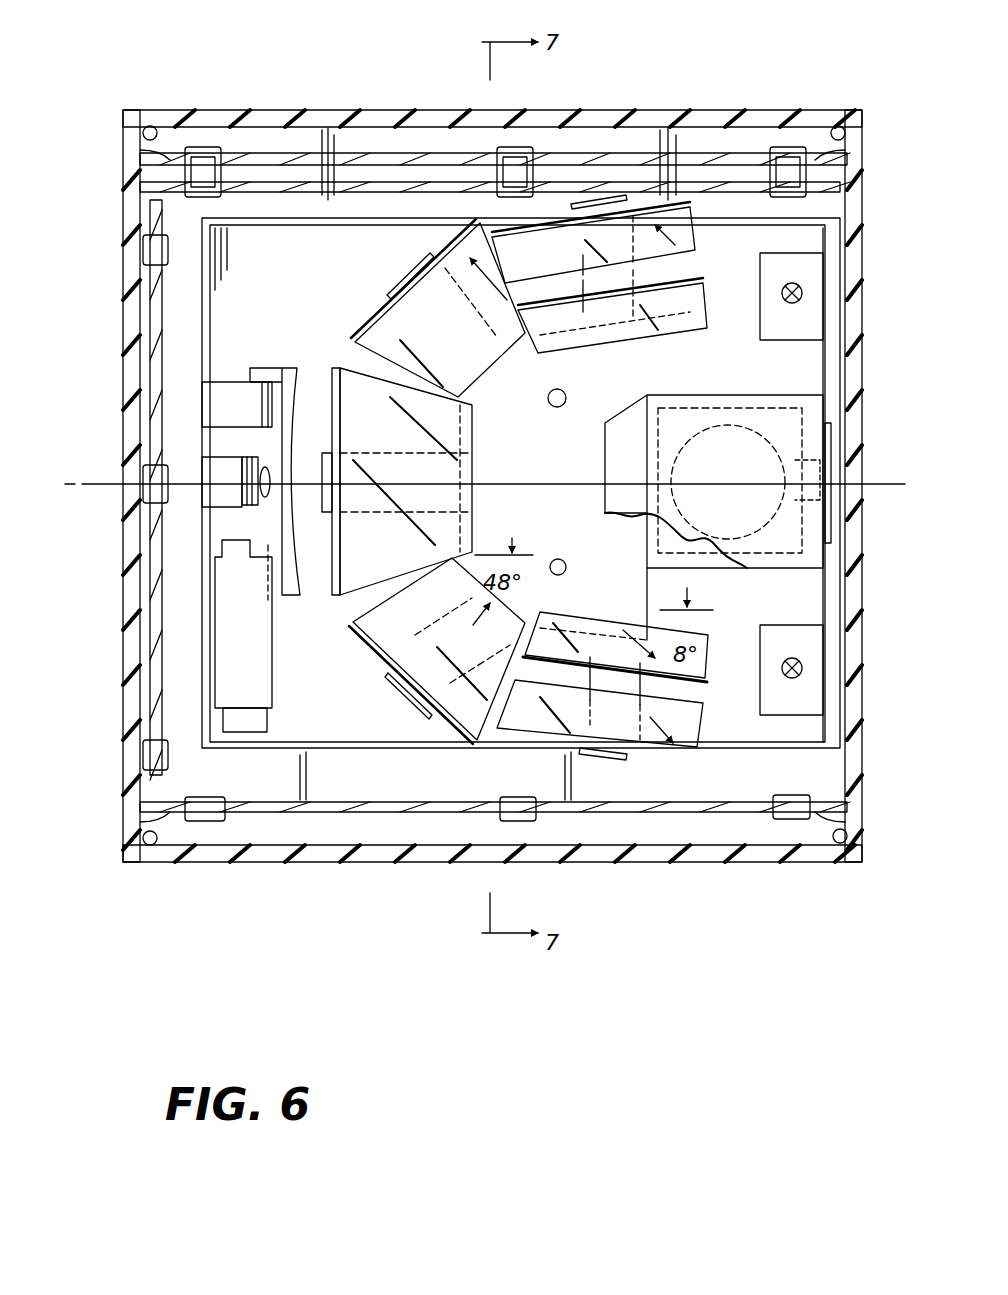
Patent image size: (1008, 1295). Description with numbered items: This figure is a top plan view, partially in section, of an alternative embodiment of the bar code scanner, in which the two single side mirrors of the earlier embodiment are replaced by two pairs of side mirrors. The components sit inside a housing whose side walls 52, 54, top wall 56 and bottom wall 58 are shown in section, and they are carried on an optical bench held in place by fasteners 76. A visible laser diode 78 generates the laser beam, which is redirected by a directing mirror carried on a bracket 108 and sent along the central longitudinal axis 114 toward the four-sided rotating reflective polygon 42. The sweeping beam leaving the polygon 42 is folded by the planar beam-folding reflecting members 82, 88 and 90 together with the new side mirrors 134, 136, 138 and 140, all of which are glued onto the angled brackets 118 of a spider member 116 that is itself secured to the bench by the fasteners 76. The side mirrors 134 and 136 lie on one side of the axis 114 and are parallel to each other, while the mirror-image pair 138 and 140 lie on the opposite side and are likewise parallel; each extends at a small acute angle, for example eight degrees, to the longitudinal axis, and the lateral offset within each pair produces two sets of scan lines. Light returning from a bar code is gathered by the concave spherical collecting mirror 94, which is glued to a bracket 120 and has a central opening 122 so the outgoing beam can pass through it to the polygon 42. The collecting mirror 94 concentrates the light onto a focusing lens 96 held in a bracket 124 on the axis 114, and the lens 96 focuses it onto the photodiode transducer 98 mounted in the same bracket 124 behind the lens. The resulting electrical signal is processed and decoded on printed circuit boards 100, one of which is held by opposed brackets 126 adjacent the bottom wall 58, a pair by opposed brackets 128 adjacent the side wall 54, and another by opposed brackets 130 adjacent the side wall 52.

The rotating reflective polygon 42 is at (725, 572).
The side wall 52 is at (348, 862).
The side wall 54 is at (385, 112).
The top wall 56 is at (858, 500).
The bottom wall 58 is at (132, 557).
The fasteners 76 is at (567, 571).
The visible laser diode 78 is at (250, 672).
The beam-folding reflecting member 82 is at (425, 481).
The beam-folding reflecting member 88 is at (385, 312).
The beam-folding reflecting member 90 is at (415, 632).
The collecting mirror 94 is at (290, 370).
The focusing lens 96 is at (605, 513).
The transducer 98 is at (815, 465).
The printed circuit boards 100 is at (710, 190).
The bracket 108 is at (205, 470).
The axis 114 is at (90, 487).
The spider member 116 is at (568, 451).
The angled brackets 118 is at (392, 290).
The bracket 120 is at (230, 382).
The central opening 122 is at (268, 487).
The bracket 124 is at (822, 290).
The brackets 126 is at (145, 755).
The brackets 128 is at (207, 147).
The brackets 130 is at (210, 822).
The side mirror 134 is at (690, 300).
The side mirror 136 is at (560, 262).
The side mirror 138 is at (700, 665).
The side mirror 140 is at (700, 742).